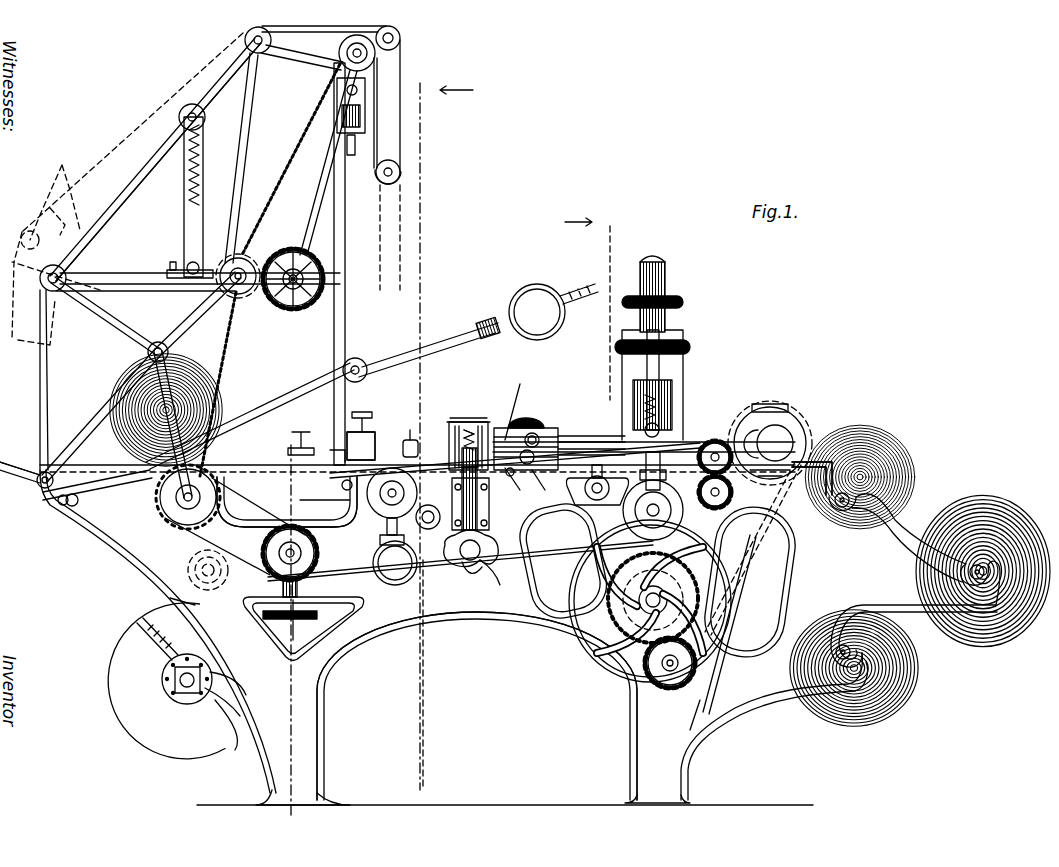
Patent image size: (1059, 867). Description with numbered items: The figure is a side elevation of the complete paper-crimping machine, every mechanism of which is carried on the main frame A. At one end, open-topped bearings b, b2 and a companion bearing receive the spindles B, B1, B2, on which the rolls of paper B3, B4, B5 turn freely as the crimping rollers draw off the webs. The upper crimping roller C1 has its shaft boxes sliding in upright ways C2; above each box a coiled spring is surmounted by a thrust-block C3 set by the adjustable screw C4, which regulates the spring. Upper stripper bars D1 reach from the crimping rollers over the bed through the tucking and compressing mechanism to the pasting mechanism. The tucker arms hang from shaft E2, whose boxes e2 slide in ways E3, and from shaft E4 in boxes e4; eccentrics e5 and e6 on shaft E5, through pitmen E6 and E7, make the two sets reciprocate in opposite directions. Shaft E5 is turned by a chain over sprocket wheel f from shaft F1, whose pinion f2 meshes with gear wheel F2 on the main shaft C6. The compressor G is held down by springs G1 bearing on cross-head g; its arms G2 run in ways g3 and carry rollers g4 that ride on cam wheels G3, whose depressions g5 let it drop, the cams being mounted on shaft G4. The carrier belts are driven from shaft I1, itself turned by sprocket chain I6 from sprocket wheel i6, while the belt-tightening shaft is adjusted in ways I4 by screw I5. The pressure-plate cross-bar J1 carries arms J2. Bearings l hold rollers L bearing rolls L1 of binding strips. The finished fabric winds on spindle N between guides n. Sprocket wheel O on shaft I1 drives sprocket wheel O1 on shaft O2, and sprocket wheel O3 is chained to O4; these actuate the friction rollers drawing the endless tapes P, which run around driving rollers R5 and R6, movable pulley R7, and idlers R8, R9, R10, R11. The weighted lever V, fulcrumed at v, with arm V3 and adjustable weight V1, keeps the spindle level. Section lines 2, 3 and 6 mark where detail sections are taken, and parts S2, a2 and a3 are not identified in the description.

The idler-roller R9 is at (256, 54).
The sprocket-wheel O4 is at (343, 51).
The idler-roller R8 is at (400, 38).
The friction driving-roller R6 is at (375, 58).
The movable pulley R7 is at (400, 176).
The friction driving-roller R5 is at (337, 98).
The idler-roller R10 is at (203, 122).
The idler-roller R11 is at (64, 272).
The tapes P is at (241, 202).
The fulcrum v is at (208, 165).
The weighted lever V is at (268, 232).
The sprocket-wheel O3 is at (232, 258).
The sprocket-wheel O1 is at (222, 266).
The shaft O2 is at (298, 264).
The section line 2 2 is at (389, 430).
The broken section line 3 3 is at (520, 500).
The section line 6 6 is at (283, 629).
The guides n is at (112, 385).
The spindle N is at (105, 412).
The shaft I1 is at (170, 512).
The sprocket-chain I6 is at (150, 505).
The sprocket-wheel O is at (235, 500).
The ways I4 is at (300, 588).
The adjusting-screw I5 is at (300, 625).
The rollers L is at (166, 681).
The bearings l is at (215, 668).
The rolls of binding-strips L1 is at (170, 591).
The main frame A is at (458, 706).
The arm S2 is at (20, 481).
The weight V1 is at (553, 312).
The lever arm V3 is at (320, 385).
The arms J2 is at (325, 428).
The cross-bar J1 is at (366, 428).
The stud a2 is at (410, 430).
The stop a3 is at (396, 446).
The upper stripper-bars D1 is at (394, 446).
The coiled springs G1 is at (476, 420).
The cross-head g is at (466, 420).
The transverse shaft E2 is at (528, 427).
The ways E3 is at (515, 404).
The boxes e2 is at (541, 421).
The eccentric-rods E6 is at (585, 437).
The eccentric-rods E7 is at (600, 437).
The shaft E4 is at (526, 482).
The boxes e4 is at (512, 482).
The arms G2 is at (460, 500).
The compressor G is at (425, 440).
The cam-wheels G3 is at (431, 528).
The ways g3 is at (460, 554).
The depressions g5 is at (488, 535).
The shaft G4 is at (473, 584).
The anti-friction rollers g4 is at (494, 571).
The sprocket-wheel i6 is at (597, 499).
The adjustable screw C4 is at (684, 347).
The upright ways C2 is at (683, 385).
The thrust-block C3 is at (633, 412).
The upper crimping-roller C1 is at (620, 432).
The main shaft C6 is at (650, 601).
The shaft F1 is at (770, 540).
The gear-wheel F2 is at (618, 640).
The sprocket-wheel f is at (660, 695).
The pinion f2 is at (703, 677).
The eccentrics e5 is at (785, 420).
The eccentrics e6 is at (754, 440).
The shaft E5 is at (830, 412).
The roll of paper B5 is at (905, 470).
The roll of paper B4 is at (983, 570).
The roll of paper B3 is at (854, 668).
The spindle B2 is at (830, 480).
The bearing b2 is at (844, 508).
The spindle B1 is at (926, 550).
The bearing b is at (974, 582).
The spindle B is at (835, 652).